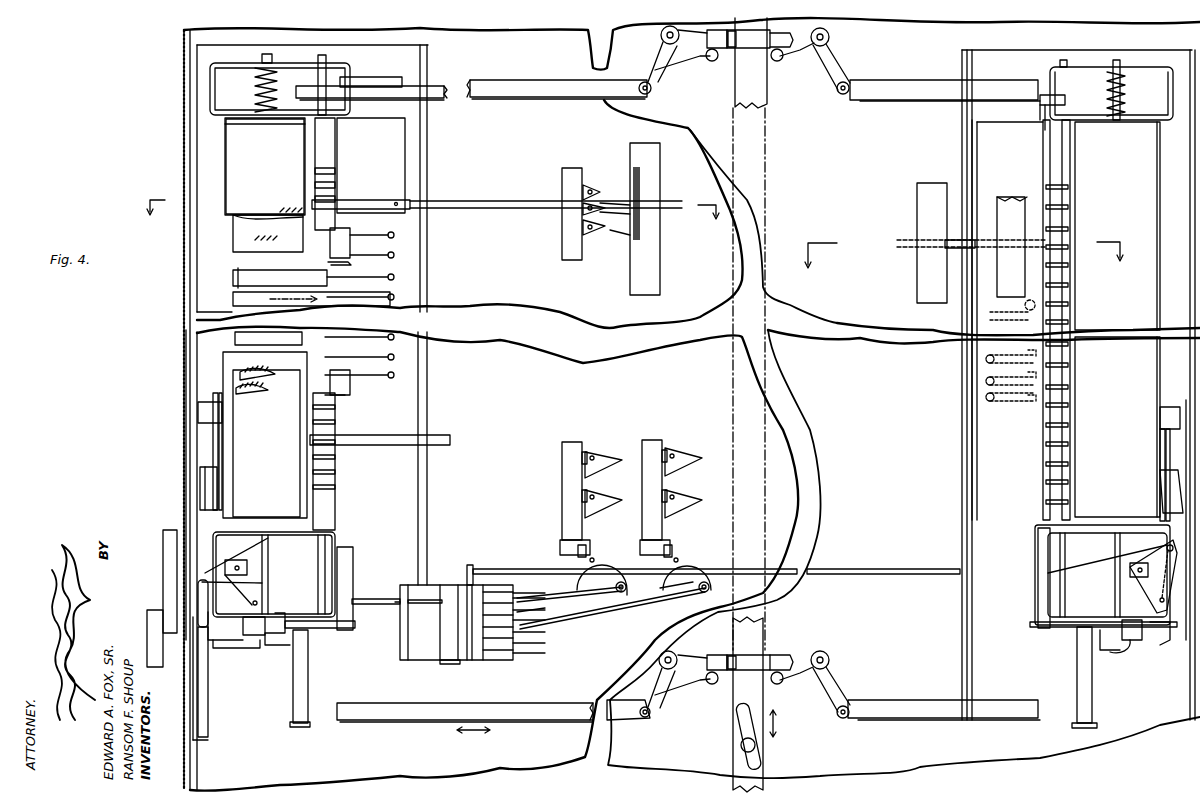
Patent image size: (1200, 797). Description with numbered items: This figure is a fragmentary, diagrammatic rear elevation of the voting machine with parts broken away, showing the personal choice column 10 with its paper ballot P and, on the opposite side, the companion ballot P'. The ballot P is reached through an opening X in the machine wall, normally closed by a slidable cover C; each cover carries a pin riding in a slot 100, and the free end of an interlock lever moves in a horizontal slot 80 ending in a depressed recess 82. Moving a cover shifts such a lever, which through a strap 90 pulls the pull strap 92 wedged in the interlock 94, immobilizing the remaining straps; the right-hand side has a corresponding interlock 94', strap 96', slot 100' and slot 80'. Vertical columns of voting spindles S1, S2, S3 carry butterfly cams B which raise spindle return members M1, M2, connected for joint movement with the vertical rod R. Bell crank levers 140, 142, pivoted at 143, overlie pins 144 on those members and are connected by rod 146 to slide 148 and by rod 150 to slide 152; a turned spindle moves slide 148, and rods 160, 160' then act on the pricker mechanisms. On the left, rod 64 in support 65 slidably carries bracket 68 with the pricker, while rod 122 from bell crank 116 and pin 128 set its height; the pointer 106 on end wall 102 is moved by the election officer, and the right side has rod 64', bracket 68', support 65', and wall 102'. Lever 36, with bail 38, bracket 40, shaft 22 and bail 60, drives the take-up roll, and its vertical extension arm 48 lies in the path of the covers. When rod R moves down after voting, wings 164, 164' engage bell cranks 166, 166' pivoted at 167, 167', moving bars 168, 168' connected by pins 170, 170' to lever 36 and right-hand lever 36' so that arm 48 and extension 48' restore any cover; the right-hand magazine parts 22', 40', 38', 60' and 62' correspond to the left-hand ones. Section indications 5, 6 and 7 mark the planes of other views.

The personal choice column 10 is at (180, 100).
The paper ballot P is at (303, 324).
The section line 5 is at (433, 219).
The bar 168 is at (473, 414).
The strap 90 is at (496, 211).
The slot 100 is at (394, 264).
The depressed recess 82 is at (352, 265).
The horizontal slot 80 is at (280, 278).
The slidable cover C is at (236, 272).
The opening X is at (234, 300).
The pull strap 92 is at (616, 200).
The interlock 94 is at (837, 223).
The vertical rod R is at (768, 104).
The wing 164 is at (724, 368).
The wing 164' is at (772, 373).
The pivot 167 is at (664, 367).
The bell crank 166 is at (682, 369).
The pivot 167' is at (843, 370).
The bell crank 166' is at (827, 364).
The bar 168' is at (938, 387).
The paper ballot P' is at (1075, 320).
The guide block 94' is at (1008, 230).
The section line 6 is at (964, 264).
The contact 96' is at (1006, 304).
The contact fingers 100' is at (1010, 400).
The slide 80' is at (1024, 407).
The stop block 65' is at (1147, 418).
The rod 64' is at (1141, 475).
The bracket 68' is at (1148, 491).
The ticket magazine 22' is at (1102, 575).
The pawl 40' is at (1126, 581).
The vertical extension 48' is at (1021, 578).
The lever 36' is at (1096, 638).
The pin 170' is at (1057, 677).
The pipe 38' is at (1111, 659).
The block 60' is at (1134, 649).
The fitting 62' is at (1170, 648).
The side plate 102' is at (1171, 554).
The end wall 102 is at (164, 485).
The section line 7 is at (212, 404).
The support 65 is at (223, 413).
The vertical rod 64 is at (232, 451).
The bracket 68 is at (181, 488).
The pointer 106 is at (170, 556).
The shaft 22 is at (274, 574).
The pin 128 is at (250, 556).
The vertical extension arm 48 is at (357, 588).
The rod 160 is at (376, 590).
The pin 170 is at (316, 678).
The lever 36 is at (320, 638).
The inverted bail 60 is at (236, 639).
The bracket 40 is at (277, 643).
The inverted bail 38 is at (241, 667).
The rod 122 is at (208, 686).
The bell crank 116 is at (198, 712).
The spindle return member M2 is at (568, 443).
The voting spindle S2 is at (595, 460).
The butterfly cam B is at (602, 490).
The spindle return member M1 is at (647, 441).
The voting spindle S1 is at (678, 456).
The voting spindle S3 is at (690, 494).
The bell crank lever 142 is at (607, 560).
The bell crank lever 140 is at (707, 567).
The pivot 143 is at (590, 558).
The rod 160' is at (713, 562).
The rod 146 is at (624, 594).
The slide 152 is at (538, 598).
The rod 150 is at (590, 605).
The pin 144 is at (660, 590).
The slide 148 is at (540, 630).